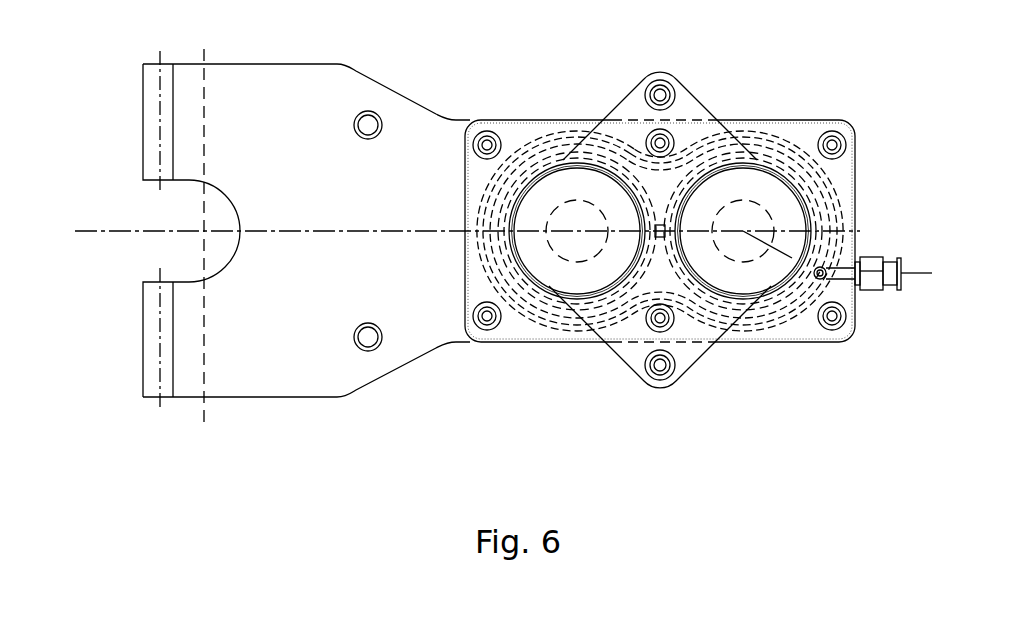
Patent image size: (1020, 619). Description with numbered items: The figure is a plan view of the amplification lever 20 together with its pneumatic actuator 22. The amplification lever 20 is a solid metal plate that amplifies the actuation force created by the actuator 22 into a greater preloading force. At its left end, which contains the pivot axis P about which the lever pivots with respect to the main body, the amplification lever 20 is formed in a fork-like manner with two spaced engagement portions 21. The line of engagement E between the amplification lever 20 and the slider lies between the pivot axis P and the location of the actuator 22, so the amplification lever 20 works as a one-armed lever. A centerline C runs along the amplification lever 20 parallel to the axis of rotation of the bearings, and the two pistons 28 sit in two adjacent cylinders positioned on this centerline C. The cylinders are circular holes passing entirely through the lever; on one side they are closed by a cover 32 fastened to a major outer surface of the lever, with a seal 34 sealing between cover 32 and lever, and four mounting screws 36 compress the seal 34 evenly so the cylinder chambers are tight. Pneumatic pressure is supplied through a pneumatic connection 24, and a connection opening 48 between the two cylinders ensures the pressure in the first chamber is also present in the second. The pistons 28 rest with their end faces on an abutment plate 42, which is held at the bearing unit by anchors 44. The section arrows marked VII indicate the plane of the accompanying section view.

The amplification lever 20 is at (310, 373).
The engagement portions 21 is at (148, 88).
The actuator 22 is at (592, 390).
The pneumatic connection 24 is at (875, 291).
The pistons 28 is at (566, 185).
The cover 32 is at (522, 333).
The seal 34 is at (767, 133).
The mounting screws 36 is at (490, 132).
The abutment plate 42 is at (632, 103).
The anchors 44 is at (667, 84).
The connection opening 48 is at (684, 216).
The centerline C is at (318, 228).
The line of engagement E is at (204, 401).
The pivot axis P is at (160, 345).
The section line VII is at (88, 218).